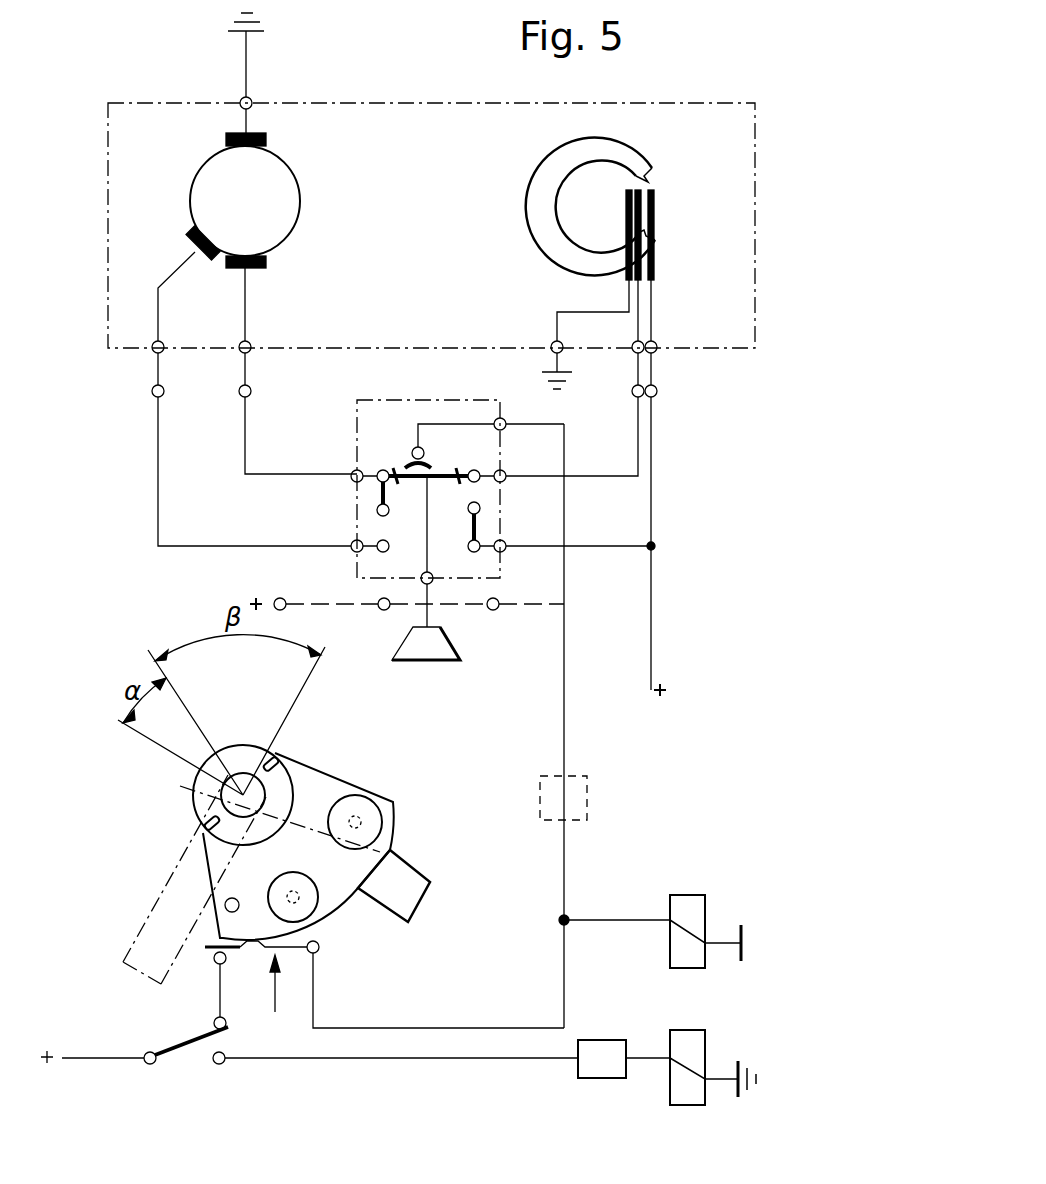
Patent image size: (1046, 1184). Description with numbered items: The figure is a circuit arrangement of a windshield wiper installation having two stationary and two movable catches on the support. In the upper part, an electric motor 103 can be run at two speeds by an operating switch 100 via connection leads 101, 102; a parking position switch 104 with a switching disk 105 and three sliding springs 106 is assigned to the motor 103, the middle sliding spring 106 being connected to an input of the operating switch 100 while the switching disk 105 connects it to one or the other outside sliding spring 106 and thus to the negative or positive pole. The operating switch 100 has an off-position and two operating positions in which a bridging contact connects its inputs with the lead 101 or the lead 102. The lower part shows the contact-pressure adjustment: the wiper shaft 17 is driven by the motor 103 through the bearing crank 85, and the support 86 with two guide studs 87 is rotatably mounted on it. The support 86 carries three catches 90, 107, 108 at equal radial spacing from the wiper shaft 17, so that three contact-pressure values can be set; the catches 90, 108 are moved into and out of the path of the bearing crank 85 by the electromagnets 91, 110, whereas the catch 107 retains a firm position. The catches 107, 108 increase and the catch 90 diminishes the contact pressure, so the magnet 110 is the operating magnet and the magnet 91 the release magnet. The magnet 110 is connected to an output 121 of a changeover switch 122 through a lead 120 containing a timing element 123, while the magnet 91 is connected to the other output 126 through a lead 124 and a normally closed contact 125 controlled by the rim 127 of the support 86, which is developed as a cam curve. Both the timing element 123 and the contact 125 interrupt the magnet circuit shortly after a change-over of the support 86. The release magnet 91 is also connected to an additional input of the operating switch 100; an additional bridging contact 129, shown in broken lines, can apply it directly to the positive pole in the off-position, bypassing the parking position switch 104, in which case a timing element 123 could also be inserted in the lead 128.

The wiper shaft 17 is at (228, 788).
The bearing crank 85 is at (410, 895).
The support 86 is at (340, 780).
The guide studs 87 is at (205, 828).
The catch 90 is at (362, 822).
The release magnet 91 is at (688, 913).
The operating switch 100 is at (357, 508).
The connection lead 101 is at (275, 474).
The connection lead 102 is at (195, 546).
The electric motor 103 is at (282, 178).
The parking position switch 104 is at (655, 171).
The switching disk 105 is at (607, 155).
The sliding springs 106 is at (652, 262).
The catch 107 is at (225, 905).
The catch 108 is at (297, 902).
The operating magnet 110 is at (685, 1085).
The lead 120 is at (420, 1060).
The output 121 is at (222, 1065).
The changeover switch 122 is at (184, 1058).
The timing element 123 is at (600, 1055).
The lead 124 is at (450, 1028).
The normally closed contact 125 is at (281, 1000).
The output 126 is at (210, 1023).
The rim 127 is at (388, 852).
The lead 128 is at (564, 718).
The additional bridging contact 129 is at (398, 604).